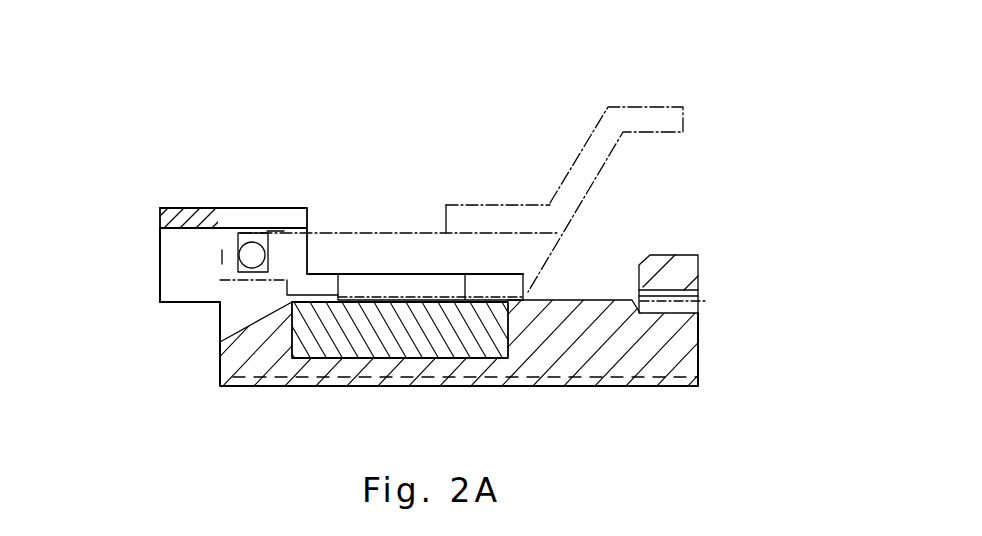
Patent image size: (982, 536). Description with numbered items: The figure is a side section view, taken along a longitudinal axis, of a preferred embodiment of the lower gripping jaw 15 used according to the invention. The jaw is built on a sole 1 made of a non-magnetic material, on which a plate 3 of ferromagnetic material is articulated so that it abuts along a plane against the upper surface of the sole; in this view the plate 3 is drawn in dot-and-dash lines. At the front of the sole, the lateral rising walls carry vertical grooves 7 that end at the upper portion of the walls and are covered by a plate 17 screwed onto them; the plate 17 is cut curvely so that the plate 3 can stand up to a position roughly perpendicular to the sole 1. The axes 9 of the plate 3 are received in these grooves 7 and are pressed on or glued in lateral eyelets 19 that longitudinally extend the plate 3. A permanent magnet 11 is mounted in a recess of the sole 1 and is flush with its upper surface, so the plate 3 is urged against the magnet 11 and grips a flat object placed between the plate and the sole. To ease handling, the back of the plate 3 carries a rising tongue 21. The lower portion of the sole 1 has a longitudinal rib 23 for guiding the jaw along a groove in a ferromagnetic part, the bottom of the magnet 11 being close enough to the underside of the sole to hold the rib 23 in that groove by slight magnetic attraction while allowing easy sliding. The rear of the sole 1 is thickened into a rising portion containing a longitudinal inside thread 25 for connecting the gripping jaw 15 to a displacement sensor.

The sole 1 is at (687, 338).
The plate 3 is at (370, 250).
The vertical grooves 7 is at (292, 230).
The axes 9 is at (251, 253).
The permanent magnet 11 is at (290, 362).
The lower gripping jaw 15 is at (168, 166).
The plate 17 is at (162, 210).
The lateral eyelets 19 is at (230, 262).
The rising tongue 21 is at (627, 117).
The longitudinal rib 23 is at (693, 387).
The longitudinal inside thread 25 is at (697, 290).